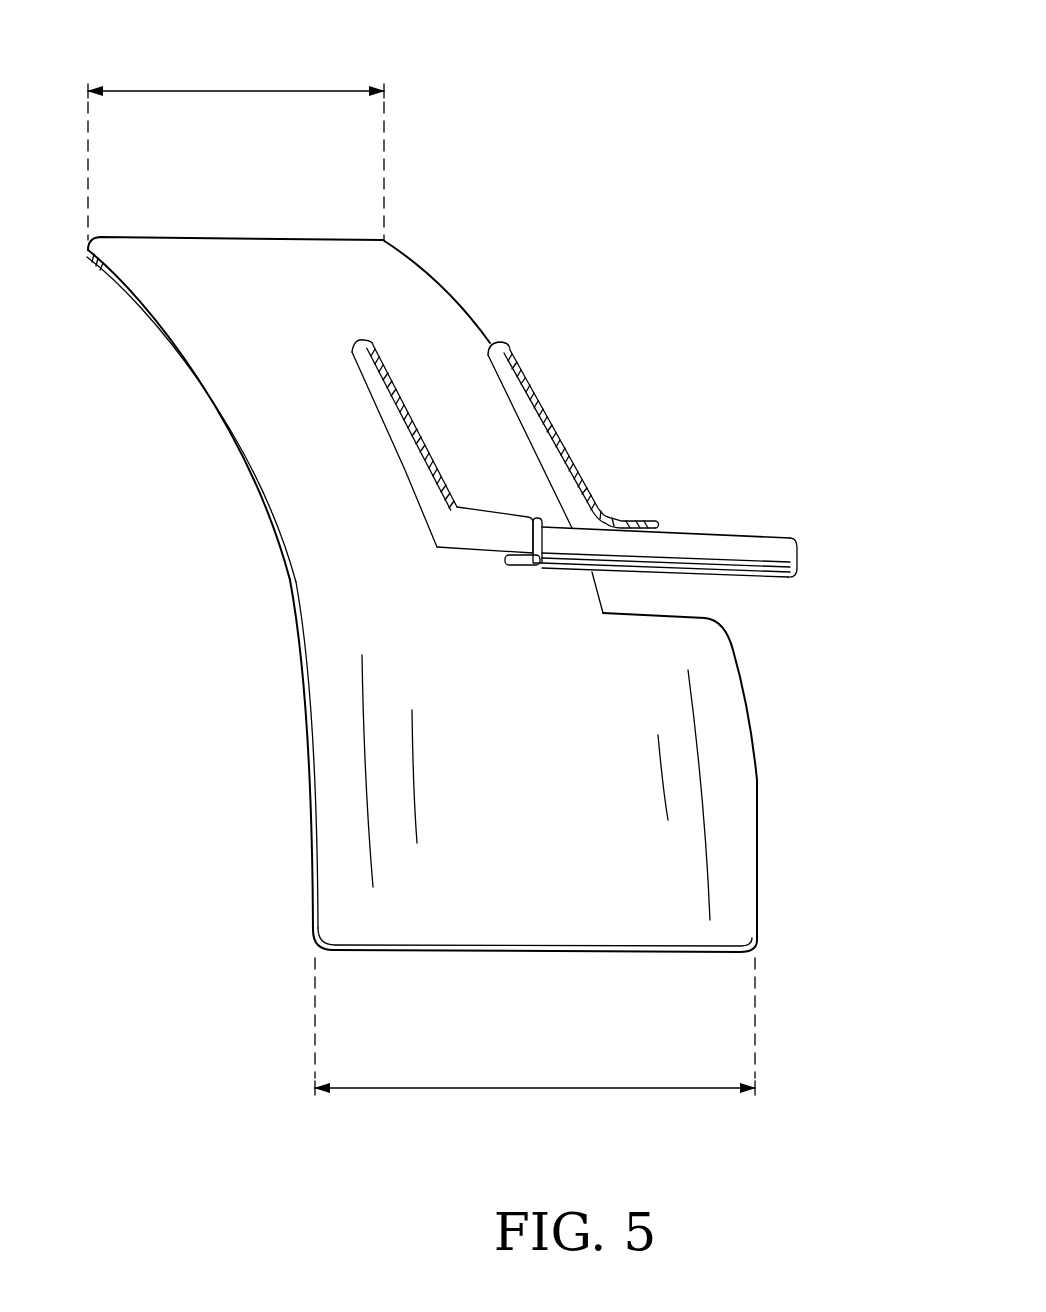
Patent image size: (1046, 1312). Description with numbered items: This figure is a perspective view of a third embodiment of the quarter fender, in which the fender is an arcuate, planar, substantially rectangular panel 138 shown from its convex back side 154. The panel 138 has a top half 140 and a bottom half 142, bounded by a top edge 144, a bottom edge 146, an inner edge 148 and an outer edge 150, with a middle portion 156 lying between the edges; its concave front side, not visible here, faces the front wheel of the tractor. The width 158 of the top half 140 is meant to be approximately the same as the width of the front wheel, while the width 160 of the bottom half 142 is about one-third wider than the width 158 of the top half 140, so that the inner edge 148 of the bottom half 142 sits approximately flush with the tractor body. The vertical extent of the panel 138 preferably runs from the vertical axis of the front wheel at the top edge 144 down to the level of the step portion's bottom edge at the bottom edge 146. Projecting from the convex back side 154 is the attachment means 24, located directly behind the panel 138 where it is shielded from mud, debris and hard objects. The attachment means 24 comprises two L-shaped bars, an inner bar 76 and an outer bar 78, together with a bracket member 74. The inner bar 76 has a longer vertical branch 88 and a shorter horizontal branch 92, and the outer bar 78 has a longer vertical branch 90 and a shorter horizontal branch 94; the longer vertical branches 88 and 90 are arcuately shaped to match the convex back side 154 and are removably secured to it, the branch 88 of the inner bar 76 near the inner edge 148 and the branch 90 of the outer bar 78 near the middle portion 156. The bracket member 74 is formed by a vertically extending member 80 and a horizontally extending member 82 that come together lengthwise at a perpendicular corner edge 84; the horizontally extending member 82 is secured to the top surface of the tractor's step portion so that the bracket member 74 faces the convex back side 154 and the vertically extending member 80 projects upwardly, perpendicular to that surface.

The attachment means 24 is at (793, 520).
The bracket member 74 is at (723, 543).
The inner bar 76 is at (560, 457).
The outer bar 78 is at (442, 520).
The vertically extending member 80 is at (790, 548).
The horizontally extending member 82 is at (518, 560).
The perpendicular corner edge 84 is at (753, 580).
The longer vertical branch 88 is at (532, 400).
The longer vertical branch 90 is at (412, 447).
The shorter horizontal branch 92 is at (638, 523).
The shorter horizontal branch 94 is at (478, 538).
The panel 138 is at (312, 540).
The top half 140 is at (215, 312).
The bottom half 142 is at (357, 830).
The top edge 144 is at (297, 233).
The bottom edge 146 is at (517, 950).
The inner edge 148 is at (435, 275).
The outer edge 150 is at (253, 468).
The convex back side 154 is at (183, 286).
The middle portion 156 is at (357, 300).
The width 158 is at (235, 90).
The width 160 is at (503, 1087).